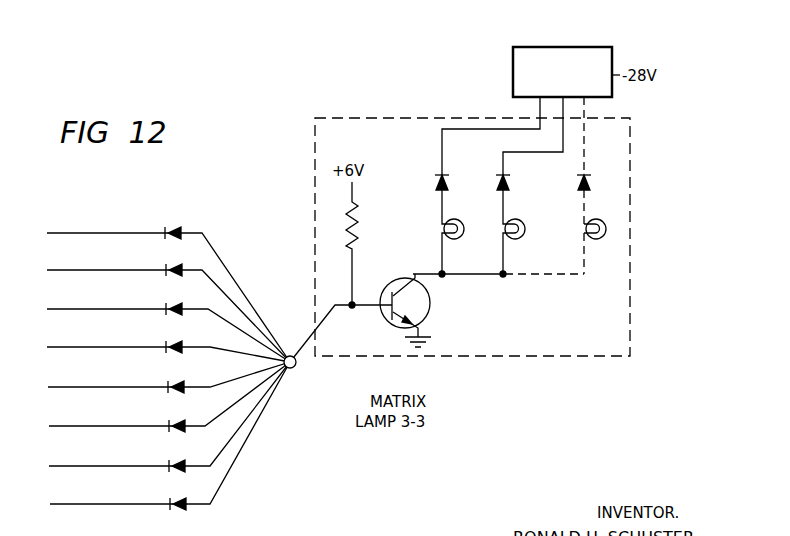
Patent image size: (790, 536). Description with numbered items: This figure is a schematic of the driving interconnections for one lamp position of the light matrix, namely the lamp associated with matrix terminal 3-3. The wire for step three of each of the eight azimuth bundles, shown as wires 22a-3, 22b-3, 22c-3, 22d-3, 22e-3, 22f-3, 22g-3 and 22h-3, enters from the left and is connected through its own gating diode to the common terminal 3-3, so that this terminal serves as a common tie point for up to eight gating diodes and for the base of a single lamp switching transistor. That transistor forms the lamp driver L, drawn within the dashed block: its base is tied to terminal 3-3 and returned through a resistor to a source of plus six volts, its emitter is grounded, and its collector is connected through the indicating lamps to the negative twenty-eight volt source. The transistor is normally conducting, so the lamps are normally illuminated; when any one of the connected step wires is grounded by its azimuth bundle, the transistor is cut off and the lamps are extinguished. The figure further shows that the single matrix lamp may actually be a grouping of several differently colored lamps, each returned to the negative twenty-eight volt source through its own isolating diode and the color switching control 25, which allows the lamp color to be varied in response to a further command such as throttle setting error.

The color switching control 25 is at (580, 47).
The wire 3 of azimuth bundle 22a 22a-3 is at (168, 346).
The wire 3 of azimuth bundle 22b 22b-3 is at (170, 436).
The wire 3 of azimuth bundle 22c 22c-3 is at (169, 417).
The wire 3 of azimuth bundle 22d 22d-3 is at (168, 307).
The wire 3 of azimuth bundle 22e 22e-3 is at (169, 377).
The wire 3 of azimuth bundle 22f 22f-3 is at (168, 289).
The wire 3 of azimuth bundle 22g 22g-3 is at (169, 397).
The wire 3 of azimuth bundle 22h 22h-3 is at (168, 327).
The matrix terminal 3-3 is at (293, 368).
The lamp driver L is at (491, 323).